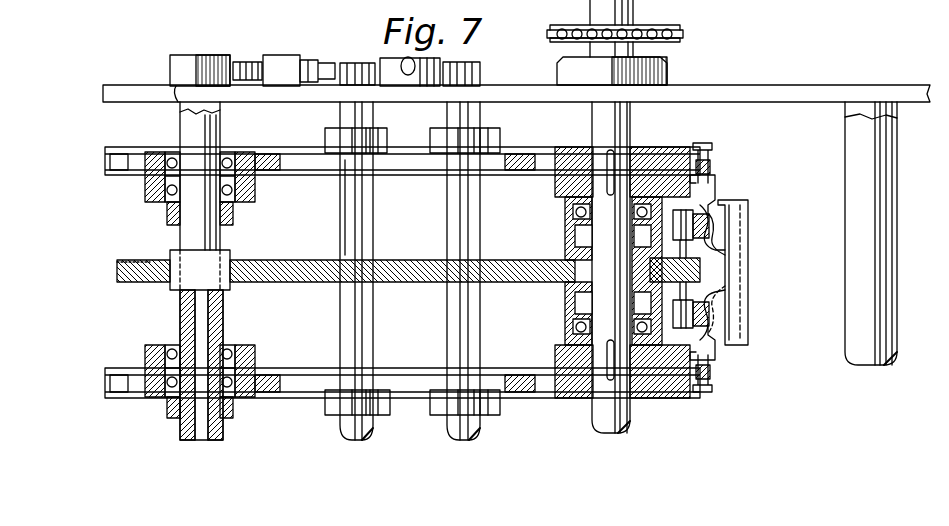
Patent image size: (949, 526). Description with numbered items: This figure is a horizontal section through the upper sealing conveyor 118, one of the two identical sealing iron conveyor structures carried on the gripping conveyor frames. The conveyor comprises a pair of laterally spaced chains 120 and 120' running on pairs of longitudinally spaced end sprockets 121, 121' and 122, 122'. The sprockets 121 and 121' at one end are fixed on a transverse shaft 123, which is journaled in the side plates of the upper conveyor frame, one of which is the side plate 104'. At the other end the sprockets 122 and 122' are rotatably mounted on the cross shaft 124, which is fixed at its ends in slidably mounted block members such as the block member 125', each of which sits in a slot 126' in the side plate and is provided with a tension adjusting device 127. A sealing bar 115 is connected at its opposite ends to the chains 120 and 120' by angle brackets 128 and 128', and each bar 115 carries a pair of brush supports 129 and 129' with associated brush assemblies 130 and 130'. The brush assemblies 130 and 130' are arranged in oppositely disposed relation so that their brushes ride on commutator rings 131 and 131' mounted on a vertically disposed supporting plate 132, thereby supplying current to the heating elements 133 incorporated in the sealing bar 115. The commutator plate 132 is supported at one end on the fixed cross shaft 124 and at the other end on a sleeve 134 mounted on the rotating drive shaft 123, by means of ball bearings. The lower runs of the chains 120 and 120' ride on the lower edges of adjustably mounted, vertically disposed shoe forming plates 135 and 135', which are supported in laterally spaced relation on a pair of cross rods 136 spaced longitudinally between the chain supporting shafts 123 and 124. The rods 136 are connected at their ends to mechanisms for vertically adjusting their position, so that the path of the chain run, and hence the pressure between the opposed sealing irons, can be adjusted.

The side plate 104' is at (516, 77).
The sealing bar 115 is at (740, 275).
The upper sealing conveyor 118 is at (520, 135).
The chain 120 is at (431, 397).
The chain 120' is at (435, 142).
The end sprocket 121 is at (619, 384).
The end sprocket 121' is at (621, 155).
The end sprocket 122 is at (182, 372).
The end sprocket 122' is at (190, 169).
The transverse shaft 123 is at (630, 137).
The cross shaft 124 is at (215, 140).
The block member 125' is at (200, 53).
The slot 126' is at (151, 78).
The tension adjusting device 127 is at (322, 60).
The angle bracket 128 is at (734, 358).
The angle bracket 128' is at (737, 179).
The brush support 129 is at (746, 313).
The brush support 129' is at (749, 227).
The brush assembly 130 is at (688, 323).
The brush assembly 130' is at (687, 218).
The commutator ring 131 is at (457, 282).
The commutator ring 131' is at (457, 251).
The supporting plate 132 is at (520, 262).
The heating element 133 is at (750, 234).
The sleeve 134 is at (566, 302).
The shoe forming plate 135 is at (449, 271).
The shoe forming plate 135' is at (382, 271).
The cross rod 136 is at (366, 222).